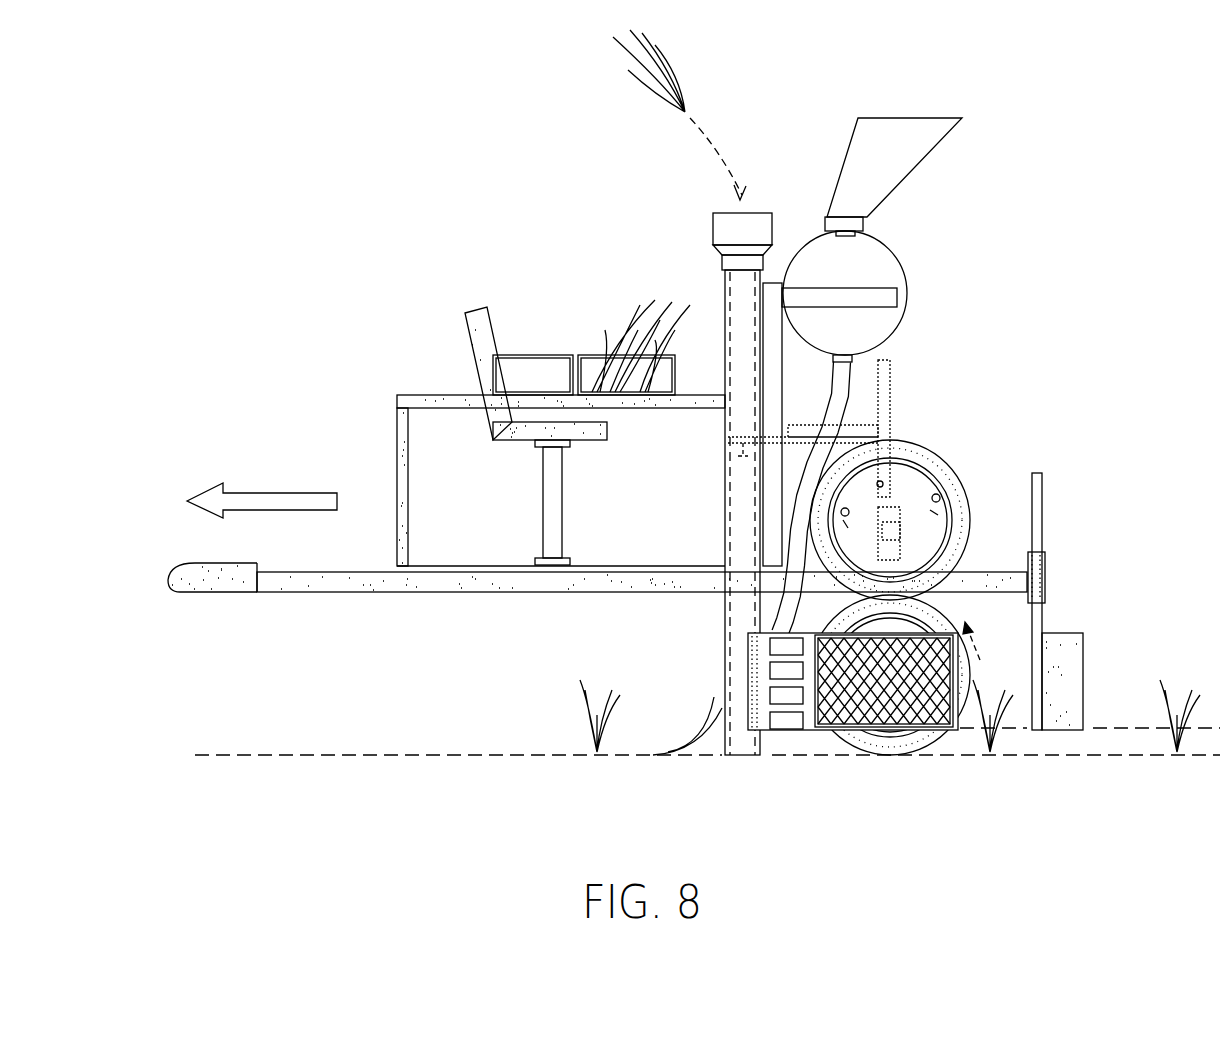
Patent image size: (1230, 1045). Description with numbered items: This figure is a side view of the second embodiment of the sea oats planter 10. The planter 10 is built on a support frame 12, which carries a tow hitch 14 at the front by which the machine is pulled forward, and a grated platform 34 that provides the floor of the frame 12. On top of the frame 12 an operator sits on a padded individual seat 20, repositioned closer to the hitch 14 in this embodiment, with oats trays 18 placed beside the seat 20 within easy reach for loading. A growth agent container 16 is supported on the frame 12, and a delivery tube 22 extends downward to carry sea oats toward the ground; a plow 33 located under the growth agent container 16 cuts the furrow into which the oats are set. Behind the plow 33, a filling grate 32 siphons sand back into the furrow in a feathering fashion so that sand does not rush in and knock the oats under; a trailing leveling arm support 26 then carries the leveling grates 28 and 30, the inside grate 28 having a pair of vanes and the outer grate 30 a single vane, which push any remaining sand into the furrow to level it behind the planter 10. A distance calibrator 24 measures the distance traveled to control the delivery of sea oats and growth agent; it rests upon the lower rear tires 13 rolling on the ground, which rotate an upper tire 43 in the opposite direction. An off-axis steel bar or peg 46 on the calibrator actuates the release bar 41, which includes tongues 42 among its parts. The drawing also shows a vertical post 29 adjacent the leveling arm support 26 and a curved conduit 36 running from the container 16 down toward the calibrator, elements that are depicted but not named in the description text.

The sea oats planter 10 is at (316, 390).
The support frame 12 is at (460, 596).
The rear tires 13 is at (890, 755).
The tow hitch 14 is at (202, 583).
The growth agent container 16 is at (893, 252).
The oats trays 18 is at (545, 355).
The seat 20 is at (520, 440).
The delivery tube 22 is at (737, 293).
The distance calibrator 24 is at (953, 494).
The leveling arm support 26 is at (1045, 580).
The inside leveling grate 28 is at (1115, 648).
The outer leveling grate 30 is at (1094, 627).
The vertical post 29 is at (1037, 510).
The filling grate 32 is at (954, 736).
The plow 33 is at (701, 757).
The grated platform 34 is at (628, 572).
The water tube 36 is at (845, 385).
The release bar 41 is at (795, 425).
The tongue 42 is at (742, 460).
The upper tire 43 is at (950, 477).
The off-axis steel bar or peg 46 is at (878, 482).